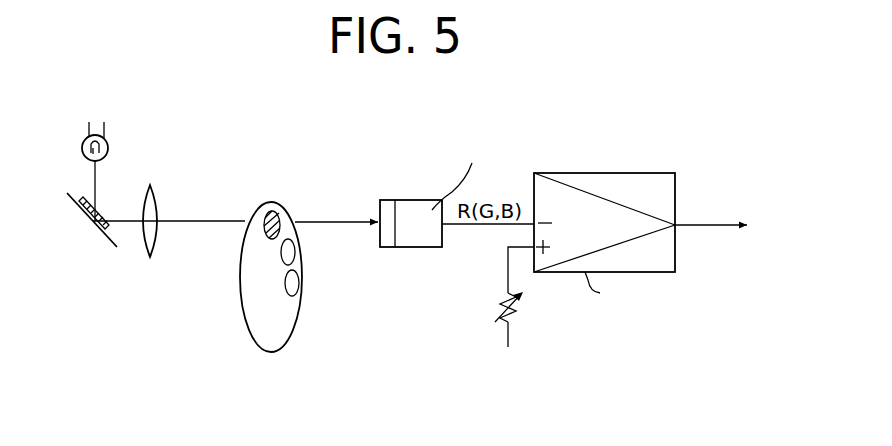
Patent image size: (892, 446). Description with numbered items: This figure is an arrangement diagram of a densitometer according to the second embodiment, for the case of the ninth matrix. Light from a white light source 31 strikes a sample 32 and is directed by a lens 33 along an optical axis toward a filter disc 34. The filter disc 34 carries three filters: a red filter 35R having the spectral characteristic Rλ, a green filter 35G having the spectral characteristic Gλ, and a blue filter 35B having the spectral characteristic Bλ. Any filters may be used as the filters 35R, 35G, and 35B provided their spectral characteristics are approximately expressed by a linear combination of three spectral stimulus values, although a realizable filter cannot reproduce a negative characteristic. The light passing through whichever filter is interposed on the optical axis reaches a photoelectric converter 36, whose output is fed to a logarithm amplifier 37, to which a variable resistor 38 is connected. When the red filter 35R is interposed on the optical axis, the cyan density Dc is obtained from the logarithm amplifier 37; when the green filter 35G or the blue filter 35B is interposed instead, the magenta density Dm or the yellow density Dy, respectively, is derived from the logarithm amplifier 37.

The white light source 31 is at (108, 143).
The sample 32 is at (98, 233).
The lens 33 is at (158, 200).
The filter disc 34 is at (270, 352).
The red filter 35R is at (278, 205).
The green filter 35G is at (292, 255).
The blue filter 35B is at (296, 286).
The photoelectric converter 36 is at (420, 200).
The logarithm amplifier 37 is at (620, 173).
The variable resistor 38 is at (518, 312).